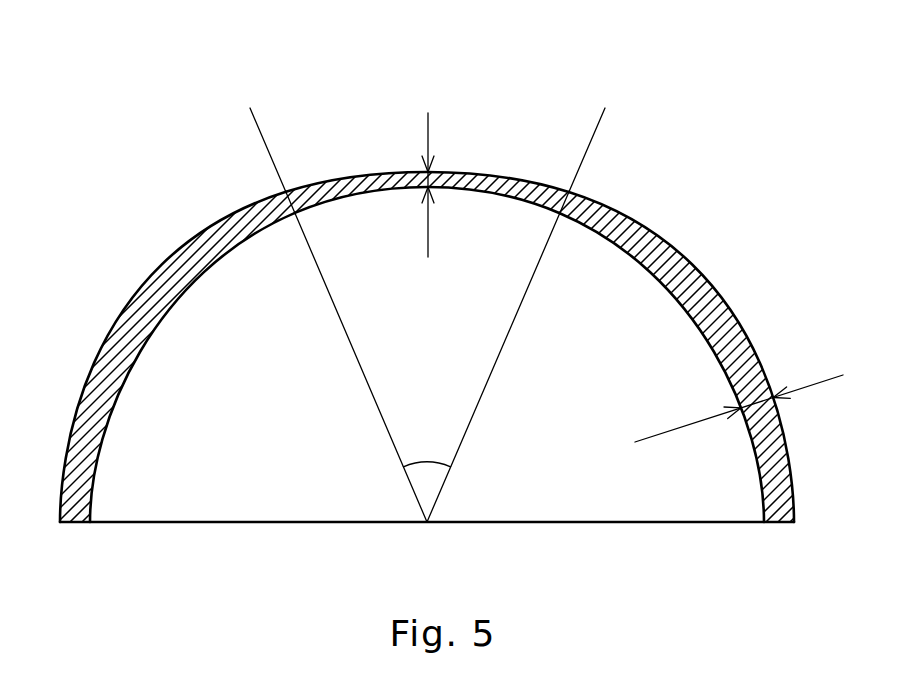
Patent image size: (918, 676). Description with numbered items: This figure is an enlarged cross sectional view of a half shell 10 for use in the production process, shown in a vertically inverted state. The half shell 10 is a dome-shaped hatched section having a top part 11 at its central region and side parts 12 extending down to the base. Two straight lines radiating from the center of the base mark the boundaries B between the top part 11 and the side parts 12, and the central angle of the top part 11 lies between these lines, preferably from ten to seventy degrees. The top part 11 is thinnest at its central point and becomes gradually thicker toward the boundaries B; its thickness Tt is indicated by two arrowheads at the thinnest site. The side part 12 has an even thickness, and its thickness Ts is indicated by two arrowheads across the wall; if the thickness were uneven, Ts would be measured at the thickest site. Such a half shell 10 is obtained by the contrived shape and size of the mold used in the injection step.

The half shell 10 is at (459, 276).
The top part 11 is at (471, 168).
The side part 12 is at (98, 323).
The boundary B is at (286, 192).
The thickness of the top part Tt is at (427, 167).
The thickness of the side part Ts is at (757, 397).